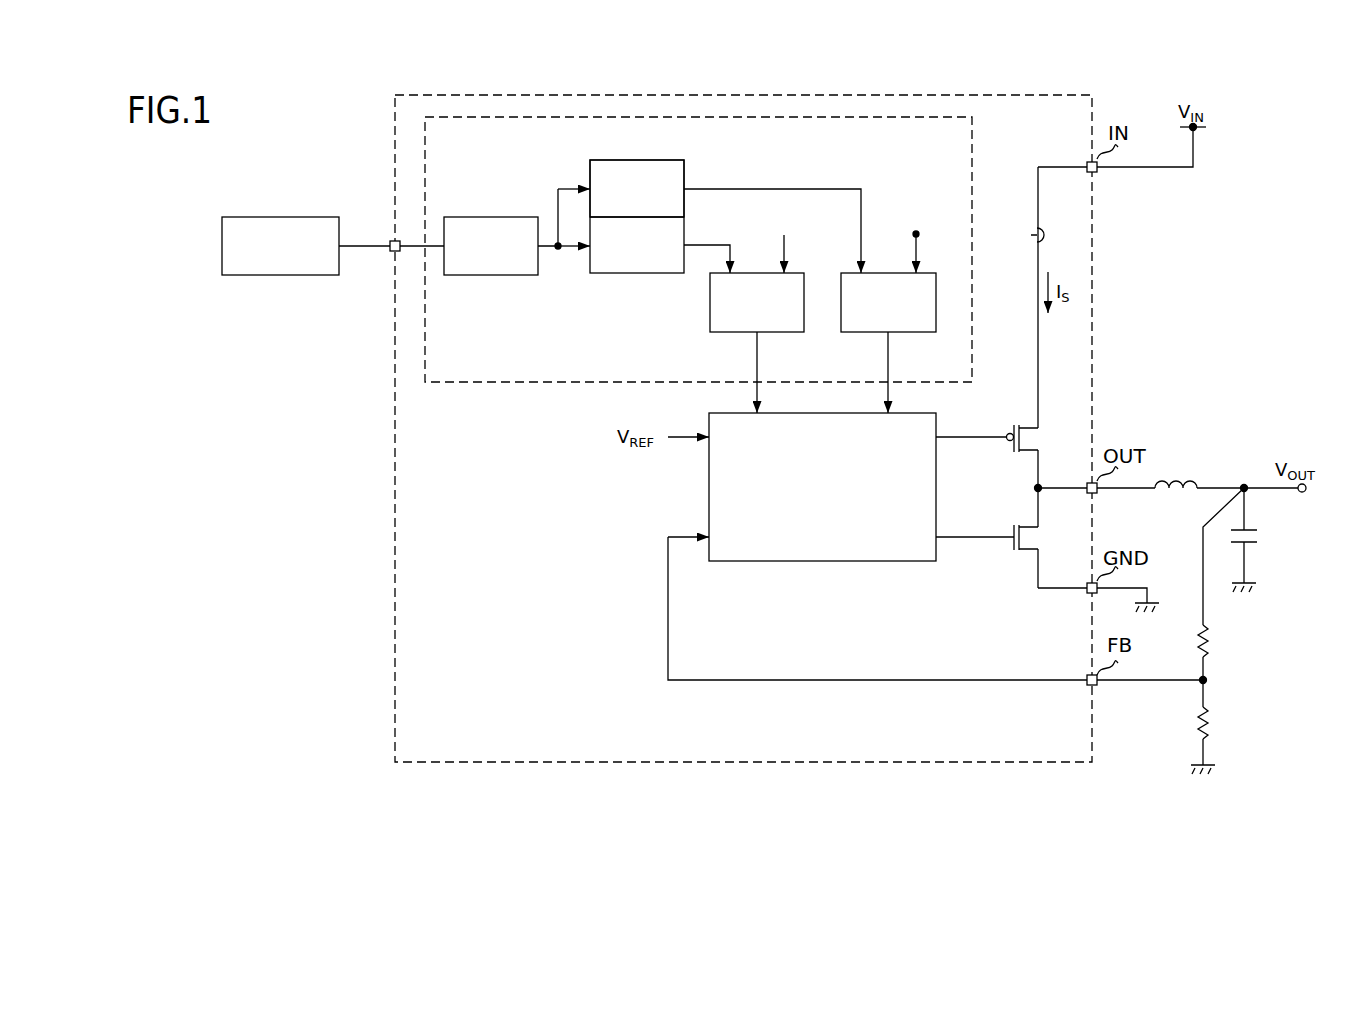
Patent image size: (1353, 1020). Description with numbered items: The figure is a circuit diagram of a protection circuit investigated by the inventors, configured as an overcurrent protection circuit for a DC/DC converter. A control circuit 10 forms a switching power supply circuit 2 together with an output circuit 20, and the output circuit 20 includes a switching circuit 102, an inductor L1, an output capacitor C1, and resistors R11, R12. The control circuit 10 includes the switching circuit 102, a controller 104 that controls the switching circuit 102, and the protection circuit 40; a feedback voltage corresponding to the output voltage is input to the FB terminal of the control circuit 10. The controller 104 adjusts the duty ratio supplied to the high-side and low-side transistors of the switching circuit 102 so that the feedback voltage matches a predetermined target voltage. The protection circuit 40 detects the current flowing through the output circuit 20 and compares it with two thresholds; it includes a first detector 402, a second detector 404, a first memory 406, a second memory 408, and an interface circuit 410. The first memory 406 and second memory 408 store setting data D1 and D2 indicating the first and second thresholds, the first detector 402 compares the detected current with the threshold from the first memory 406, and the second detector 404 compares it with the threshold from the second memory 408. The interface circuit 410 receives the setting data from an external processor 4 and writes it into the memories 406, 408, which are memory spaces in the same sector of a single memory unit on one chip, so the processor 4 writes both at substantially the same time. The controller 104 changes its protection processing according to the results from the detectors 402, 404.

The switching power supply circuit 2 is at (1308, 826).
The processor 4 is at (270, 217).
The control circuit 10 is at (695, 762).
The output circuit 20 is at (1154, 657).
The protection circuit 40 is at (537, 382).
The switching circuit 102 is at (1000, 598).
The controller 104 is at (820, 561).
The first detector 402 is at (710, 322).
The second detector 404 is at (918, 332).
The first memory 406 is at (612, 273).
The second memory 408 is at (618, 160).
The interface circuit 410 is at (500, 275).
The inductor L1 is at (1177, 480).
The output capacitor C1 is at (1264, 536).
The resistor R11 is at (1218, 640).
The resistor R12 is at (1235, 722).